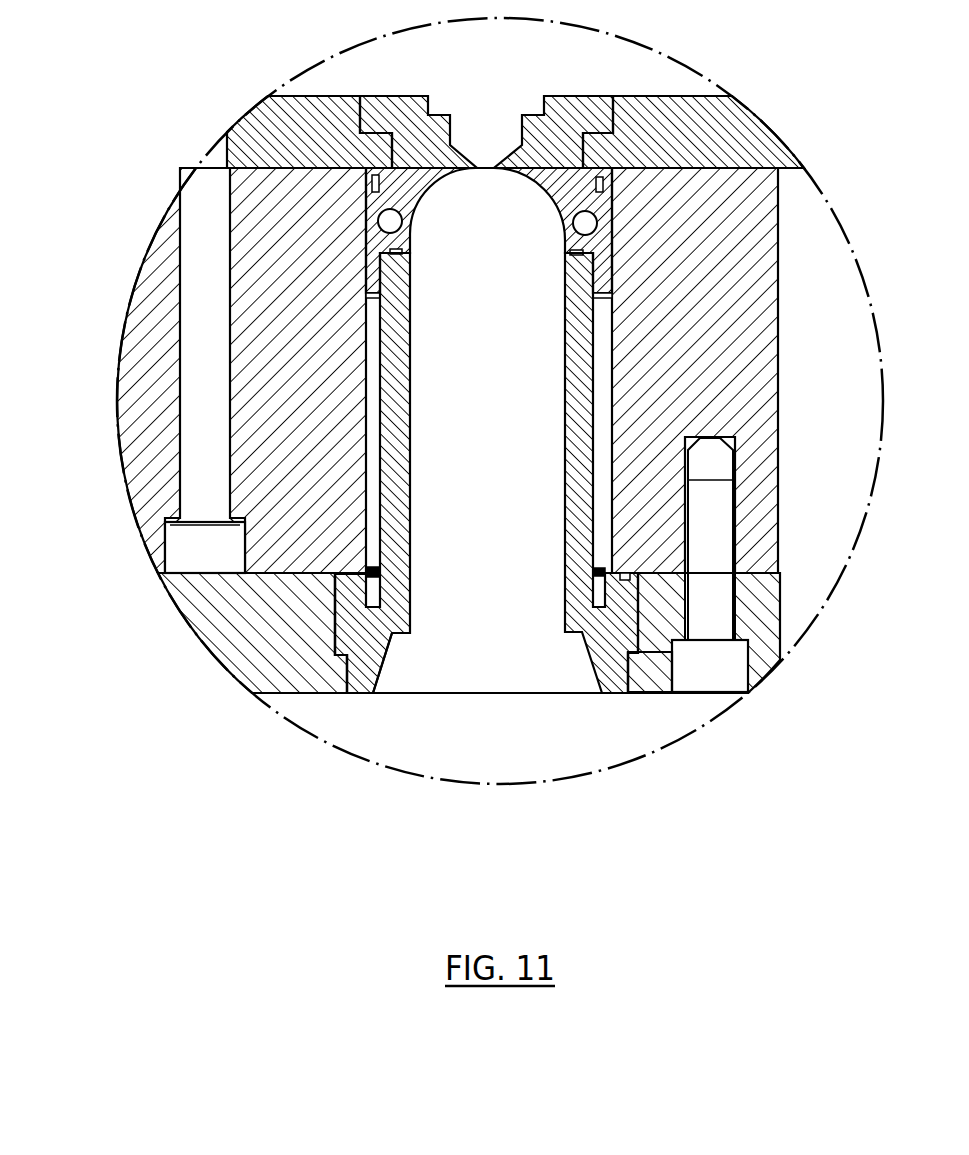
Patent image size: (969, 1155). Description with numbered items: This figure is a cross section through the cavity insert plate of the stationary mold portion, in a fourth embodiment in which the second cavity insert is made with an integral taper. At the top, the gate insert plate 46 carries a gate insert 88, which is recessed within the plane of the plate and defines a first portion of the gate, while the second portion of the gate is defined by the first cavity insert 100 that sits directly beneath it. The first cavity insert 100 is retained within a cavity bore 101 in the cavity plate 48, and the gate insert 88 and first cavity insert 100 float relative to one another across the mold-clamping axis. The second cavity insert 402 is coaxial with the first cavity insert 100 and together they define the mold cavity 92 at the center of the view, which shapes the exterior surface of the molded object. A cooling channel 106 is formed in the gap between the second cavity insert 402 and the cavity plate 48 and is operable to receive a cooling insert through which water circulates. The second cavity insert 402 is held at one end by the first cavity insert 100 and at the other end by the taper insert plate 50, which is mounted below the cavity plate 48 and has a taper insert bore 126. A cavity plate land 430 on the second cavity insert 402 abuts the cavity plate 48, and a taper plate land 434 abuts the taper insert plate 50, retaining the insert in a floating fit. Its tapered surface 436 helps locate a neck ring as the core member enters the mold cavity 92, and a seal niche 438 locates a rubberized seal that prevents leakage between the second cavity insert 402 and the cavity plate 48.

The gate insert plate 46 is at (706, 93).
The gate insert 88 is at (563, 96).
The first cavity insert 100 is at (423, 222).
The cavity plate 48 is at (136, 320).
The cooling channel 106 is at (603, 403).
The mold cavity 92 is at (505, 424).
The second cavity insert having an integral taper 402 is at (411, 480).
The cavity bore 101 is at (340, 580).
The cavity plate land 430 is at (600, 571).
The taper insert plate 50 is at (180, 618).
The seal niche 438 is at (350, 576).
The tapered surface 436 is at (592, 663).
The taper insert bore 126 is at (630, 653).
The taper plate land 434 is at (630, 650).